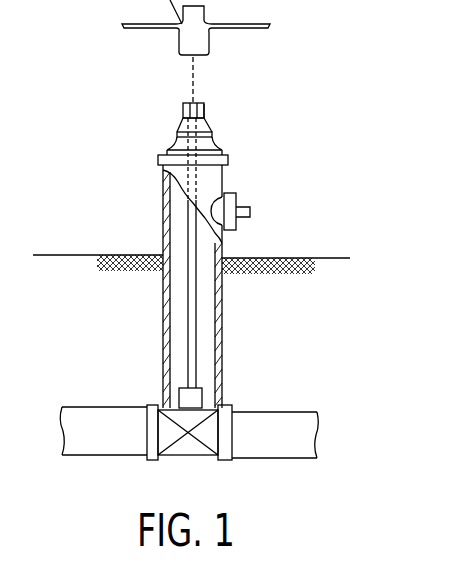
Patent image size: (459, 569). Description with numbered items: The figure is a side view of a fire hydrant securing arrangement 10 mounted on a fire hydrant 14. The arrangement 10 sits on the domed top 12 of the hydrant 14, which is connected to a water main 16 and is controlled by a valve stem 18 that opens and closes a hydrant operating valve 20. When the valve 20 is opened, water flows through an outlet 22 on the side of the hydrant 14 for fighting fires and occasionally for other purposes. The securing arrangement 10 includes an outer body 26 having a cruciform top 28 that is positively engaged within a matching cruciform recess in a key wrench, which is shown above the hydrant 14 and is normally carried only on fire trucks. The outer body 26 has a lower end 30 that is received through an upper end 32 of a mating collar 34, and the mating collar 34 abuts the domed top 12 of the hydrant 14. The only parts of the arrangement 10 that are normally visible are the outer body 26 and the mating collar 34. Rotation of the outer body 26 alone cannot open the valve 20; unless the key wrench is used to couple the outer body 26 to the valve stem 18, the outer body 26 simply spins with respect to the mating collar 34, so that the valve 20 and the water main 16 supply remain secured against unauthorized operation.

The fire hydrant securing arrangement 10 is at (119, 91).
The domed top 12 is at (166, 148).
The fire hydrant 14 is at (163, 222).
The water main 16 is at (297, 448).
The valve stem 18 is at (192, 308).
The hydrant operating valve 20 is at (187, 448).
The outlet 22 is at (224, 230).
The outer body 26 is at (205, 112).
The cruciform top 28 is at (205, 106).
The lower end 30 is at (211, 122).
The upper end 32 is at (179, 118).
The mating collar 34 is at (179, 127).